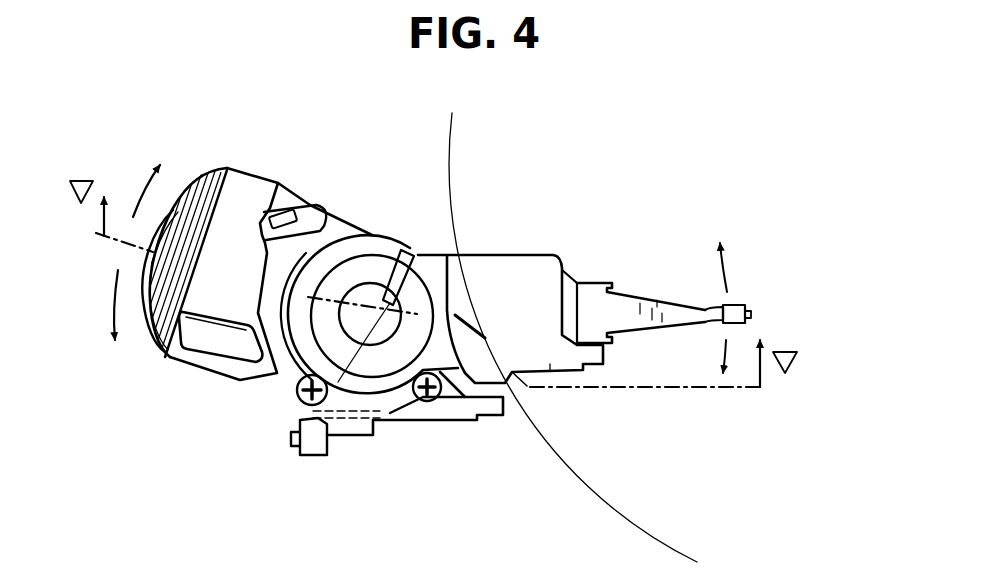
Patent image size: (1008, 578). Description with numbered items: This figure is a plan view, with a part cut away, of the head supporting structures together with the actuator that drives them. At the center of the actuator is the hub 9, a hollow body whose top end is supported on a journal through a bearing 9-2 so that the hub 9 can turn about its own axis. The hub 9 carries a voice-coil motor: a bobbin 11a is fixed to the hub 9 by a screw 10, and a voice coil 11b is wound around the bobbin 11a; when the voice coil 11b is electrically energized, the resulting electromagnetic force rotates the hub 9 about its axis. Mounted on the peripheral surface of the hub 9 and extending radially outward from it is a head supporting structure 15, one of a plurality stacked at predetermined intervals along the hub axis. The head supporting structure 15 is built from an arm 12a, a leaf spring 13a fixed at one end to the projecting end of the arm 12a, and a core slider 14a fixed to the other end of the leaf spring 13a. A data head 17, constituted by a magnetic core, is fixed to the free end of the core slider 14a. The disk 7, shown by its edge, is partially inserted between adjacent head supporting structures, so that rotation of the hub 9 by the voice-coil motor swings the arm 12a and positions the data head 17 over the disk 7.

The disk 7 is at (552, 450).
The hub 9 is at (377, 247).
The bearing 9-2 is at (422, 253).
The screw 10 is at (290, 213).
The bobbin 11a is at (247, 183).
The voice coil 11b is at (208, 170).
The arm 12a is at (502, 267).
The leaf spring 13a is at (636, 300).
The core slider 14a is at (740, 305).
The head supporting structure 15 is at (578, 225).
The data head 17 is at (760, 318).